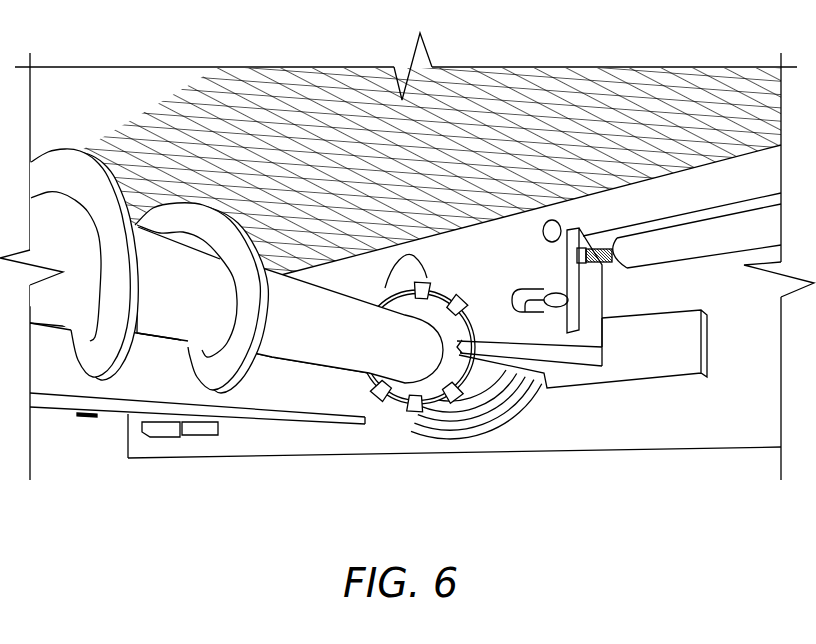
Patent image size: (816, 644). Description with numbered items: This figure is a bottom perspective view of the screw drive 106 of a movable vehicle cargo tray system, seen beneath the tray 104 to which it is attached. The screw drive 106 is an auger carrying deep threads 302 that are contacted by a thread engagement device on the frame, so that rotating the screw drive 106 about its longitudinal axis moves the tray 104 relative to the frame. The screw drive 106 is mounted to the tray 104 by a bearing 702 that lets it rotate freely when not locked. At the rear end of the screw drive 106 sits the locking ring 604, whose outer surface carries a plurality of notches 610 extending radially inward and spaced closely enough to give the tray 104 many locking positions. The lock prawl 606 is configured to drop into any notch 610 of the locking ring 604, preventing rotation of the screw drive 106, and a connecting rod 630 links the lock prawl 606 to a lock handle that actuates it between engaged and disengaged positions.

The tray 104 is at (405, 327).
The screw drive 106 is at (325, 352).
The thread 302 is at (108, 382).
The locking ring 604 is at (402, 393).
The lock prawl 606 is at (442, 397).
The notch 610 is at (415, 277).
The connecting rod 630 is at (719, 245).
The bearing 702 is at (489, 417).